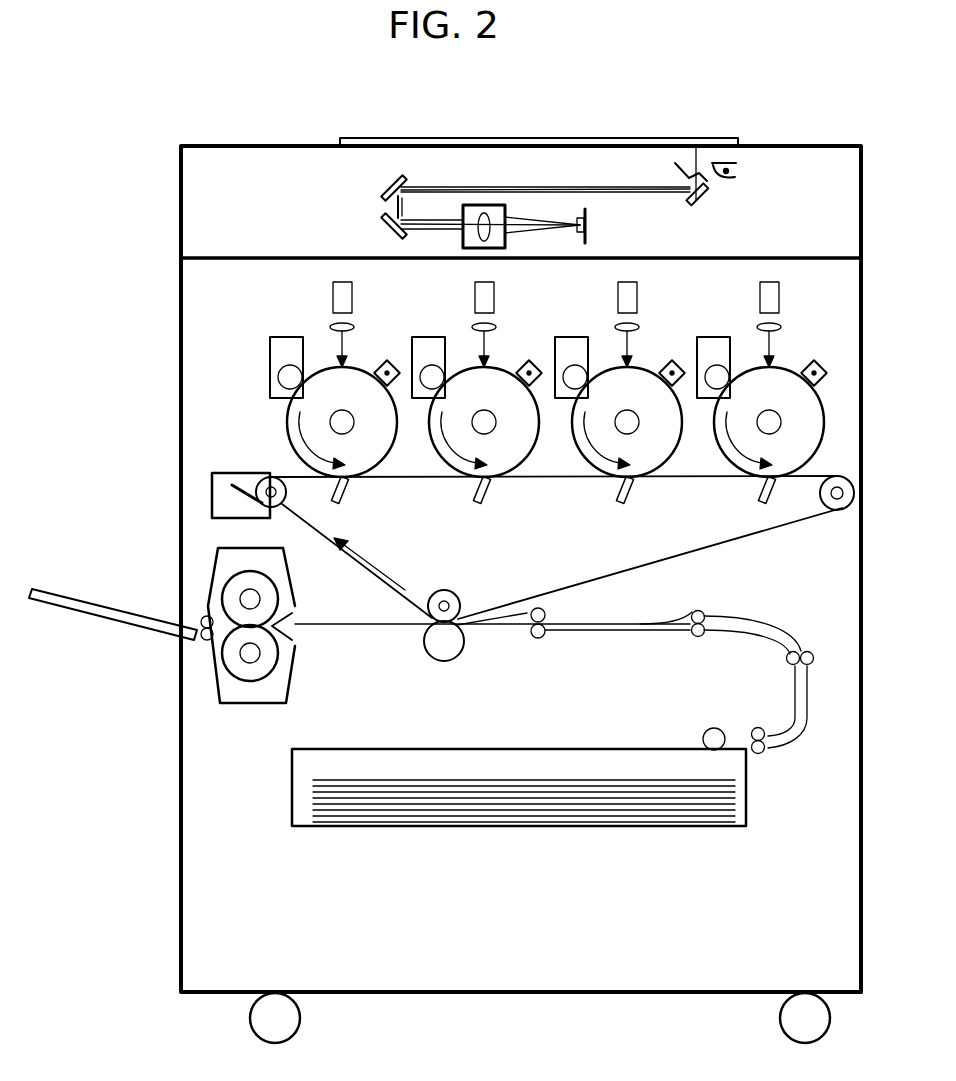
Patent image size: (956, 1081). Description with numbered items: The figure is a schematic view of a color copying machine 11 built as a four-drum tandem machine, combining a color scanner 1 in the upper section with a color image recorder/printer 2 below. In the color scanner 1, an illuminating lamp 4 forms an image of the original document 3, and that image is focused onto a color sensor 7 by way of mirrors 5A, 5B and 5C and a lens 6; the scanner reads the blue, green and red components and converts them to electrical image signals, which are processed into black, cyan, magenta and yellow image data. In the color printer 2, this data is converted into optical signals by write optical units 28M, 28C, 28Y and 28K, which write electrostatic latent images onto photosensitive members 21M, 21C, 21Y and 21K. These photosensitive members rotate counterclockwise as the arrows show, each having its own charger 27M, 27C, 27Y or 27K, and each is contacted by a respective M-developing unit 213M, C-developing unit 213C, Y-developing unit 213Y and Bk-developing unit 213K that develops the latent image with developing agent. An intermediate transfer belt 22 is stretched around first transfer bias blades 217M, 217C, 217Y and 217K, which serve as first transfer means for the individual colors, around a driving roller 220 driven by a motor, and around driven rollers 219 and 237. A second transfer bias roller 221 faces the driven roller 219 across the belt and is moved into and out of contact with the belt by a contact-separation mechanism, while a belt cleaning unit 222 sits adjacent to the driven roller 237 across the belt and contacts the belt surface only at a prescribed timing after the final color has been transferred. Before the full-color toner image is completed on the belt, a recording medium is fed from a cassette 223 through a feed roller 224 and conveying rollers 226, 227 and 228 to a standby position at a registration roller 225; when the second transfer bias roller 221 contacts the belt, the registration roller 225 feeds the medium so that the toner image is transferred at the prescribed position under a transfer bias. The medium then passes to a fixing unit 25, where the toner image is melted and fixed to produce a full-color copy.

The color copying machine 11 is at (122, 144).
The color scanner 1 is at (838, 146).
The color image recorder/printer 2 is at (862, 534).
The original document 3 is at (734, 138).
The illuminating lamp 4 is at (734, 176).
The mirror 5A is at (702, 205).
The mirror 5B is at (387, 191).
The mirror 5C is at (386, 229).
The lens 6 is at (505, 223).
The color sensor 7 is at (592, 235).
The photosensitive member 21M is at (342, 422).
The photosensitive member 21C is at (484, 422).
The photosensitive member 21Y is at (627, 422).
The photosensitive member 21K is at (769, 422).
The M-developing unit 213M is at (286, 336).
The C-developing unit 213C is at (428, 336).
The Y-developing unit 213Y is at (571, 336).
The Bk-developing unit 213K is at (713, 336).
The charger 27M is at (388, 362).
The charger 27C is at (530, 362).
The charger 27Y is at (673, 362).
The charger 27K is at (815, 362).
The write optical unit 28M is at (353, 293).
The write optical unit 28C is at (495, 293).
The write optical unit 28Y is at (638, 293).
The write optical unit 28K is at (780, 293).
The first transfer bias blade 217M is at (357, 494).
The first transfer bias blade 217C is at (467, 494).
The first transfer bias blade 217Y is at (607, 494).
The first transfer bias blade 217K is at (759, 500).
The intermediate transfer belt 22 is at (690, 555).
The driven roller 219 is at (452, 593).
The driving roller 220 is at (836, 512).
The second transfer bias roller 221 is at (454, 661).
The belt cleaning unit 222 is at (192, 477).
The cassette 223 is at (285, 782).
The feed roller 224 is at (704, 729).
The registration roller 225 is at (536, 640).
The conveying roller 226 is at (694, 643).
The conveying roller 227 is at (811, 650).
The conveying roller 228 is at (763, 756).
The driven roller 237 is at (256, 480).
The fixing unit 25 is at (202, 575).